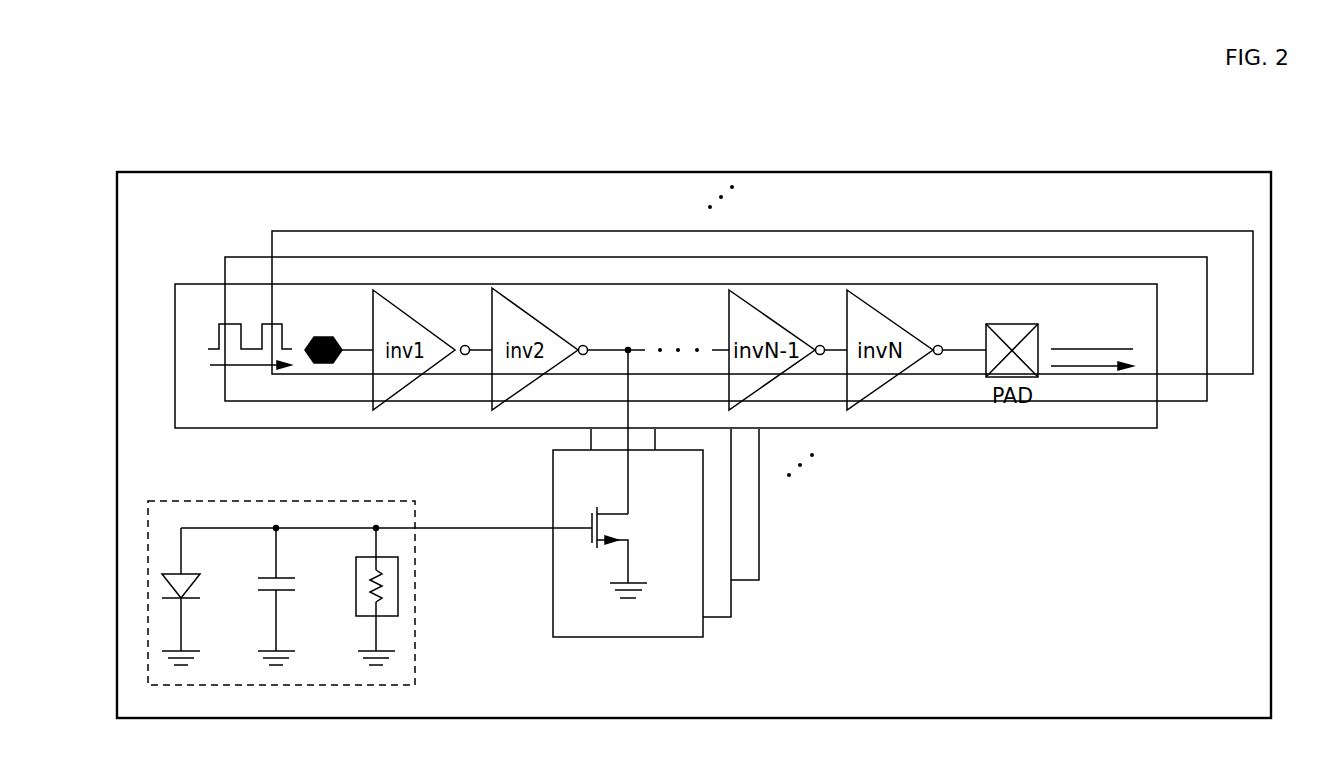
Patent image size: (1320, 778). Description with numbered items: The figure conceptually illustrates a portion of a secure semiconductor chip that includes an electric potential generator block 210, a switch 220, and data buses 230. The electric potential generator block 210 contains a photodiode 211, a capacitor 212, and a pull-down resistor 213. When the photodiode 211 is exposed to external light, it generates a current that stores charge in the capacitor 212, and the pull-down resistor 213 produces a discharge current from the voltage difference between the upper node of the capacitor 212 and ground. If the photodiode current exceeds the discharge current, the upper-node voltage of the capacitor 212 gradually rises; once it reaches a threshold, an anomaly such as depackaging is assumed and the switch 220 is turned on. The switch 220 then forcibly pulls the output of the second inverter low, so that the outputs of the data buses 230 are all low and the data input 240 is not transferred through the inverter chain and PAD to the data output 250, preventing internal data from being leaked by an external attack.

The electric potential generator block 210 is at (303, 577).
The photodiode 211 is at (181, 600).
The capacitor 212 is at (276, 612).
The pull-down resistor 213 is at (376, 620).
The switch 220 is at (553, 490).
The data buses 230 is at (195, 284).
The data input 240 is at (218, 338).
The data output 250 is at (1078, 349).